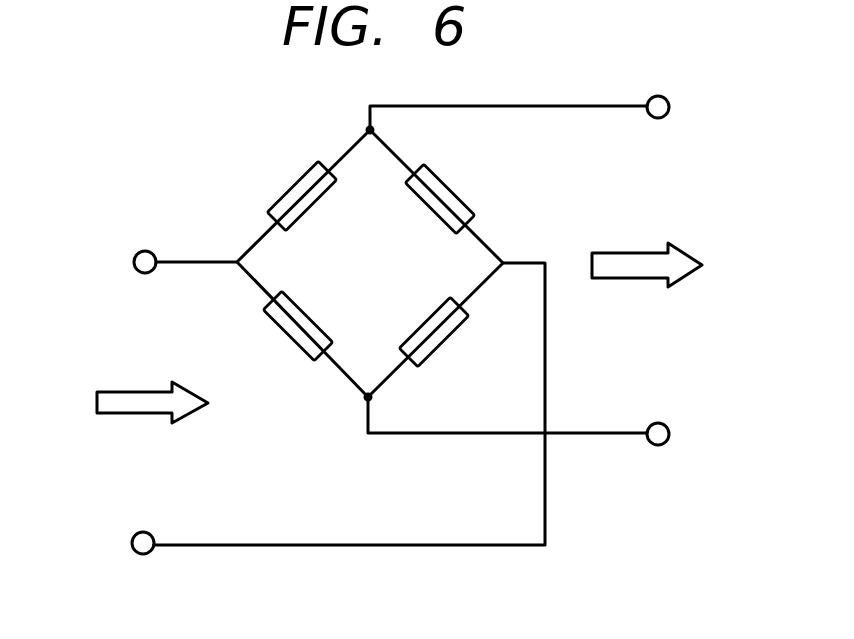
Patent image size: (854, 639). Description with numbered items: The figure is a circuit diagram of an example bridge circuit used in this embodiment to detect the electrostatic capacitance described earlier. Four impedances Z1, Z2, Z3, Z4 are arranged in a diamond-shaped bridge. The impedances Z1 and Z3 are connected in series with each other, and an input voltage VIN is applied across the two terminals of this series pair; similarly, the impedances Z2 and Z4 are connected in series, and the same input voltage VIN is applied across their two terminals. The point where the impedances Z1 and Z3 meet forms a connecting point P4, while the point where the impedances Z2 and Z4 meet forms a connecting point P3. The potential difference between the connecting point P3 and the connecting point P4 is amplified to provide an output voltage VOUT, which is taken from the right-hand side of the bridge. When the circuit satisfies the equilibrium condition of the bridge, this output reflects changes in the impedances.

The impedance Z1 is at (299, 187).
The impedance Z2 is at (294, 330).
The impedance Z3 is at (444, 189).
The impedance Z4 is at (446, 334).
The connecting point P3 is at (371, 367).
The connecting point P4 is at (372, 153).
The input voltage VIN is at (127, 402).
The output voltage VOUT is at (684, 265).